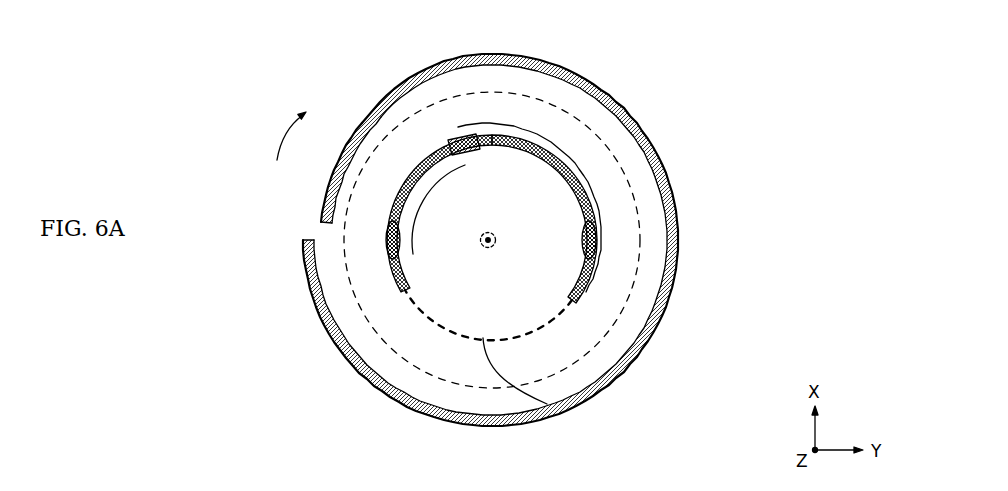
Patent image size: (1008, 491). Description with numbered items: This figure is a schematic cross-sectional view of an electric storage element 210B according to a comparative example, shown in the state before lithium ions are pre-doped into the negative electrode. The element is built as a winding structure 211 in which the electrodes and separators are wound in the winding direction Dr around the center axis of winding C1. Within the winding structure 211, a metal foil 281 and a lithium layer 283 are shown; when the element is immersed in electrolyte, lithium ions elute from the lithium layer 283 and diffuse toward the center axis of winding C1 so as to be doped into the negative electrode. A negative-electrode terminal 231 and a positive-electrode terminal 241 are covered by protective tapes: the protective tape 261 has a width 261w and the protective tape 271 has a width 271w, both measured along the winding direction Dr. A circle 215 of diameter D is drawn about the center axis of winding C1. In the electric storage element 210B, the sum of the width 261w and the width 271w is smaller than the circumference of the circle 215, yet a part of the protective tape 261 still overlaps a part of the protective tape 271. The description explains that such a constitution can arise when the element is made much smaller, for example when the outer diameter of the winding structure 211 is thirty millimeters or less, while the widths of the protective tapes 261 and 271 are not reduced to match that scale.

The electric storage element 210B is at (656, 94).
The winding structure 211 is at (663, 313).
The circle 215 is at (548, 406).
The metal foil 281 is at (363, 113).
The lithium layer 283 is at (423, 93).
The protective tape 261 is at (566, 190).
The width of protective tape 261w is at (583, 310).
The protective tape 271 is at (400, 288).
The width of protective tape 271w is at (410, 252).
The positive-electrode terminal 241 is at (397, 233).
The negative-electrode terminal 231 is at (596, 230).
The center axis of winding C1 is at (486, 245).
The winding direction Dr is at (285, 136).